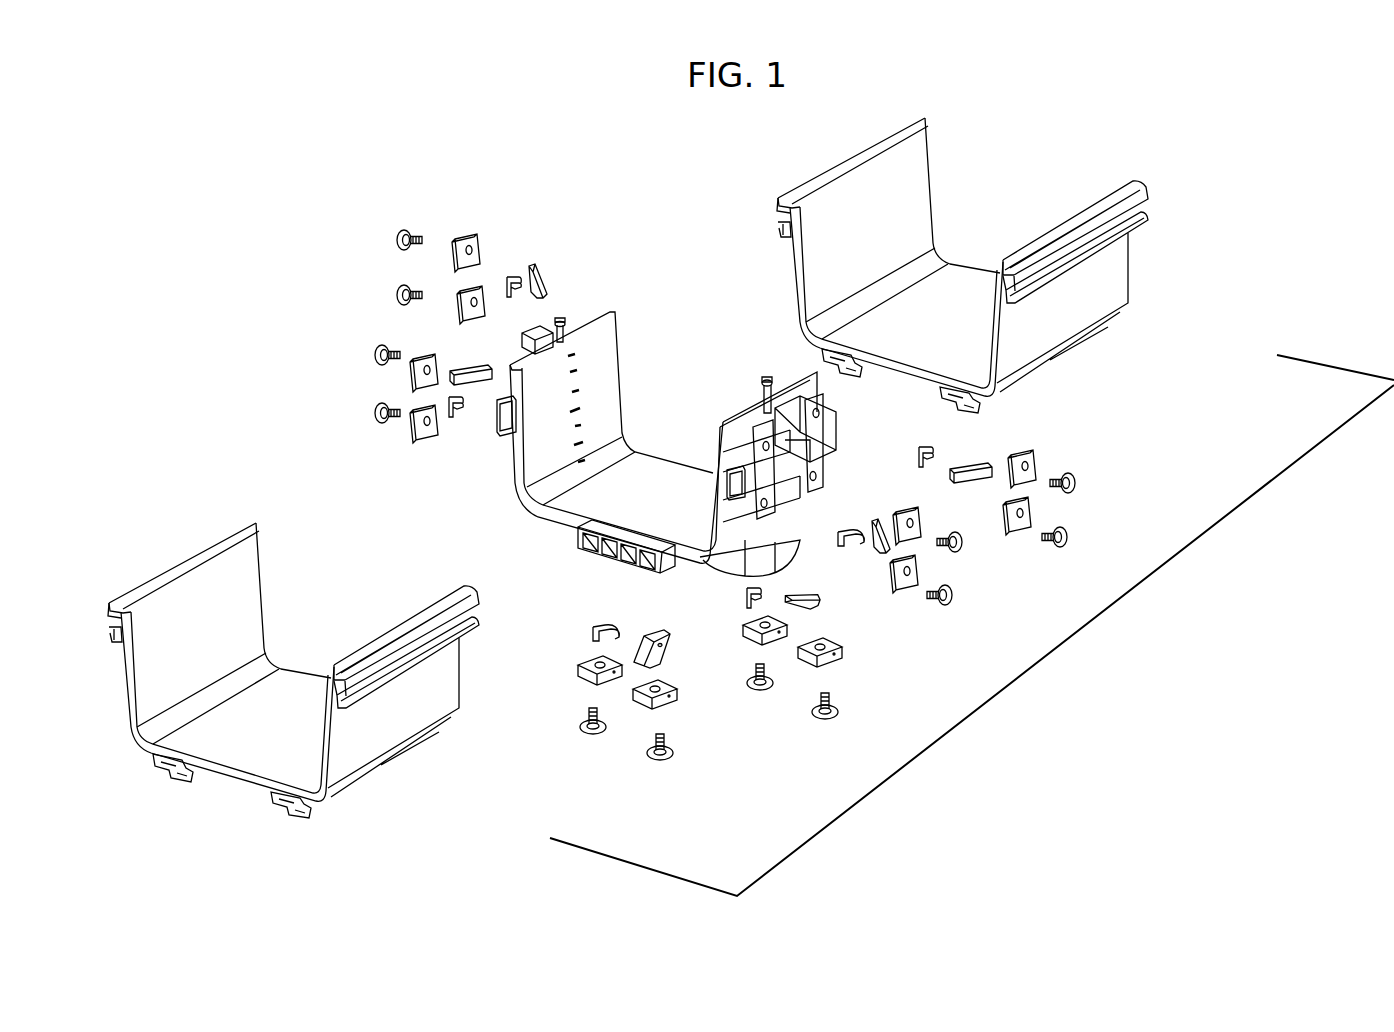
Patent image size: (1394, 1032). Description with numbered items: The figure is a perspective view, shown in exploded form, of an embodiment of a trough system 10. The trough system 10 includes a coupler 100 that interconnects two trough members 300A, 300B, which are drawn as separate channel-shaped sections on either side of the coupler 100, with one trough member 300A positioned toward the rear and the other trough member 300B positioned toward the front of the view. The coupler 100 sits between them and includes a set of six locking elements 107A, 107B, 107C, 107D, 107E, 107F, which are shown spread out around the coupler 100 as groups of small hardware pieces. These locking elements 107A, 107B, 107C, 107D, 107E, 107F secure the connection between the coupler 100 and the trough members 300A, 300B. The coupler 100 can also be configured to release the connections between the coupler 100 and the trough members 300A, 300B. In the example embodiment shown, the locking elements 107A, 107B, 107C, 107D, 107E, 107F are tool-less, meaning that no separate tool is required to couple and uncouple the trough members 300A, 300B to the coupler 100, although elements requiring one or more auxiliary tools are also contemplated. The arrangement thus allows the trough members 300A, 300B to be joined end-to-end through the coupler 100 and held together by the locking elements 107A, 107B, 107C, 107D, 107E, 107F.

The trough system 10 is at (1057, 652).
The coupler 100 is at (525, 225).
The trough member 300A is at (977, 178).
The trough member 300B is at (158, 557).
The locking element 107A is at (1057, 577).
The locking element 107B is at (938, 617).
The locking element 107C is at (690, 777).
The locking element 107D is at (852, 730).
The locking element 107E is at (398, 443).
The locking element 107F is at (413, 318).